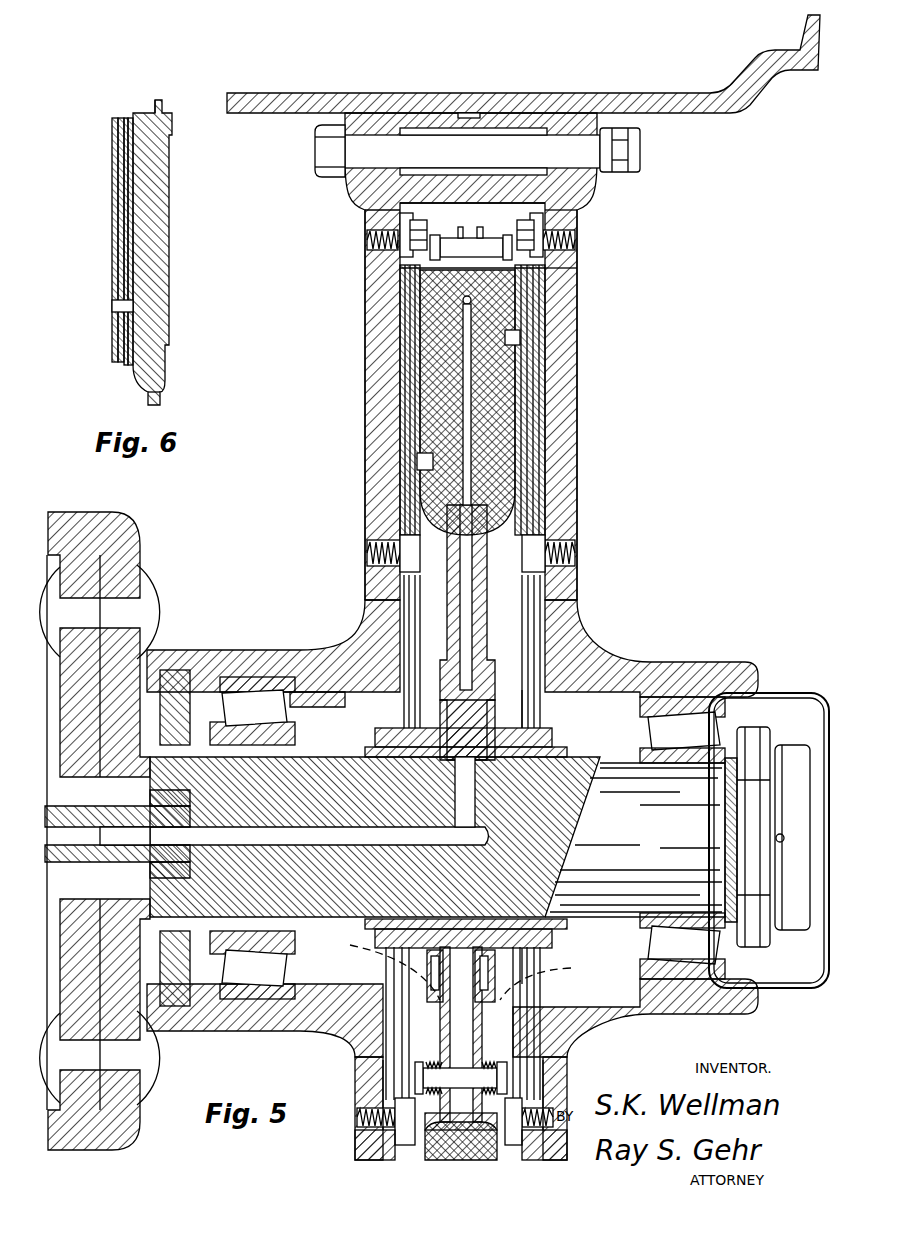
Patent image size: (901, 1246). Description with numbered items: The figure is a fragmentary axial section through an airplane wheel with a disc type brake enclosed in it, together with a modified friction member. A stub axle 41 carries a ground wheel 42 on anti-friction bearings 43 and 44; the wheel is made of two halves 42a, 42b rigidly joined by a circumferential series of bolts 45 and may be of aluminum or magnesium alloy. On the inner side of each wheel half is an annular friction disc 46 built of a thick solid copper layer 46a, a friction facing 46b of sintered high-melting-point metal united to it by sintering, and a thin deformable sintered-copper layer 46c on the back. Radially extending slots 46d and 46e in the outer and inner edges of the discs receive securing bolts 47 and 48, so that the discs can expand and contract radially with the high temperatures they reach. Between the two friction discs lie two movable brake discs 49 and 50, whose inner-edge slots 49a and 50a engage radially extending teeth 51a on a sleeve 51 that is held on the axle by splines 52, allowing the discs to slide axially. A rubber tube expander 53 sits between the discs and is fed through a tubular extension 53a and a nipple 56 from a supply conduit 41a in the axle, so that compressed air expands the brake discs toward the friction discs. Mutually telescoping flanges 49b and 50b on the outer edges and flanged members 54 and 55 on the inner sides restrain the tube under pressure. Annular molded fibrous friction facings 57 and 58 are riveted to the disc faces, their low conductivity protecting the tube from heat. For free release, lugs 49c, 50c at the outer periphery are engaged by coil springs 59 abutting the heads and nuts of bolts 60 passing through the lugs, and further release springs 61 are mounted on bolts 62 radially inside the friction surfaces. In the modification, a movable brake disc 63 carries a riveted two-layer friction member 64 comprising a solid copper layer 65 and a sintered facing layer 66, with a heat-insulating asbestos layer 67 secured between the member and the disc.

In FIG. 5, the stub axle 41 is at (628, 852).
In FIG. 5, the supply conduit 41a is at (288, 838).
In FIG. 5, the ground wheel 42 is at (595, 272).
In FIG. 5, the wheel half 42a is at (370, 330).
In FIG. 5, the wheel half 42b is at (577, 345).
In FIG. 5, the anti-friction bearing 43 is at (290, 708).
In FIG. 5, the anti-friction bearing 44 is at (705, 718).
In FIG. 5, the bolt 45 is at (641, 150).
In FIG. 5, the annular friction disc 46 is at (365, 207).
In FIG. 5, the layer of solid metal 46a is at (403, 350).
In FIG. 5, the friction facing 46b is at (409, 377).
In FIG. 5, the layer of deformable metal 46c is at (415, 405).
In FIG. 5, the radially extending slot 46d is at (400, 230).
In FIG. 5, the radially extending slot 46e is at (395, 560).
In FIG. 5, the bolt 47 is at (367, 243).
In FIG. 5, the bolt 48 is at (370, 548).
In FIG. 5, the movable brake element 49 is at (420, 290).
In FIG. 5, the slot 49a is at (383, 964).
In FIG. 5, the telescoping flange 49b is at (400, 268).
In FIG. 5, the lug 49c is at (461, 238).
In FIG. 5, the movable brake element 50 is at (547, 310).
In FIG. 5, the slot 50a is at (553, 978).
In FIG. 5, the telescoping flange 50b is at (577, 282).
In FIG. 5, the lug 50c is at (480, 220).
In FIG. 5, the sleeve 51 is at (552, 735).
In FIG. 5, the radially extending teeth 51a is at (524, 692).
In FIG. 5, the splines 52 is at (567, 752).
In FIG. 5, the rubber tube expander 53 is at (577, 452).
In FIG. 6, the rubber tube expander 53 is at (172, 212).
In FIG. 5, the tubular extension 53a is at (487, 600).
In FIG. 5, the flanged member 54 is at (370, 1145).
In FIG. 5, the flanged member 55 is at (540, 1150).
In FIG. 5, the nipple 56 is at (455, 752).
In FIG. 5, the friction facing 57 is at (370, 452).
In FIG. 5, the friction facing 58 is at (545, 470).
In FIG. 5, the coil spring 59 is at (458, 228).
In FIG. 5, the bolt 60 is at (447, 242).
In FIG. 5, the release spring 61 is at (420, 1070).
In FIG. 5, the bolt 62 is at (420, 1075).
In FIG. 6, the movable brake disc 63 is at (140, 113).
In FIG. 6, the two-layer friction member 64 is at (125, 118).
In FIG. 6, the layer of solid copper 65 is at (113, 222).
In FIG. 6, the facing layer 66 is at (113, 175).
In FIG. 6, the heat-insulating layer 67 is at (113, 258).